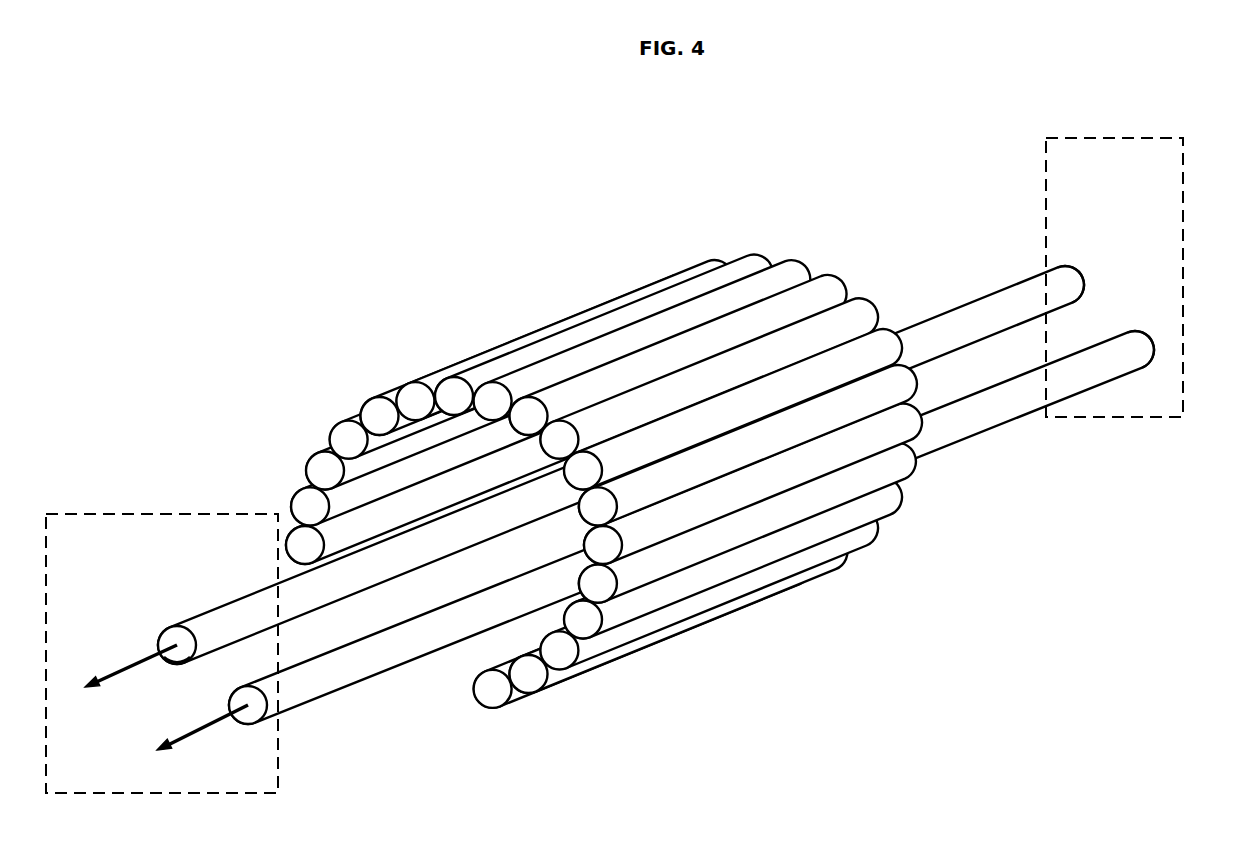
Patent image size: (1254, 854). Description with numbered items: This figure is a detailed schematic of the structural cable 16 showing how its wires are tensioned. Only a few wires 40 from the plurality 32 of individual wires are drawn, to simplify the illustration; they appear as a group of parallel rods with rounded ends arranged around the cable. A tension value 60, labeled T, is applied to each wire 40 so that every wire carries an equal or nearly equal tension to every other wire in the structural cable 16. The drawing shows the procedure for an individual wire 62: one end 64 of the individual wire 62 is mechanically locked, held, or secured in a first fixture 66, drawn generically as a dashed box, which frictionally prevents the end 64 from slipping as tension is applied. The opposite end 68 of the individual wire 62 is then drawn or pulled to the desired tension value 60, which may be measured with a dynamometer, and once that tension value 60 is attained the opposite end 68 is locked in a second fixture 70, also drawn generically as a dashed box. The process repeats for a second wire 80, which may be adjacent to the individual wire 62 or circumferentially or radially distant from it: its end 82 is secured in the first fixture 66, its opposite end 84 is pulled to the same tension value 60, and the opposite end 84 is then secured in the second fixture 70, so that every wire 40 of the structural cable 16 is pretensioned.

The structural cable 16 is at (271, 186).
The plurality of individual wires 32 is at (604, 454).
The wire 40 is at (380, 411).
The second wire 80 is at (308, 692).
The individual wire 62 is at (168, 636).
The end of the individual wire 64 is at (1068, 282).
The first fixture 66 is at (1115, 137).
The opposite end of the individual wire 68 is at (178, 665).
The second fixture 70 is at (98, 513).
The end of the second wire 82 is at (1135, 352).
The opposite end of the second wire 84 is at (250, 727).
The tension value 60 is at (113, 680).